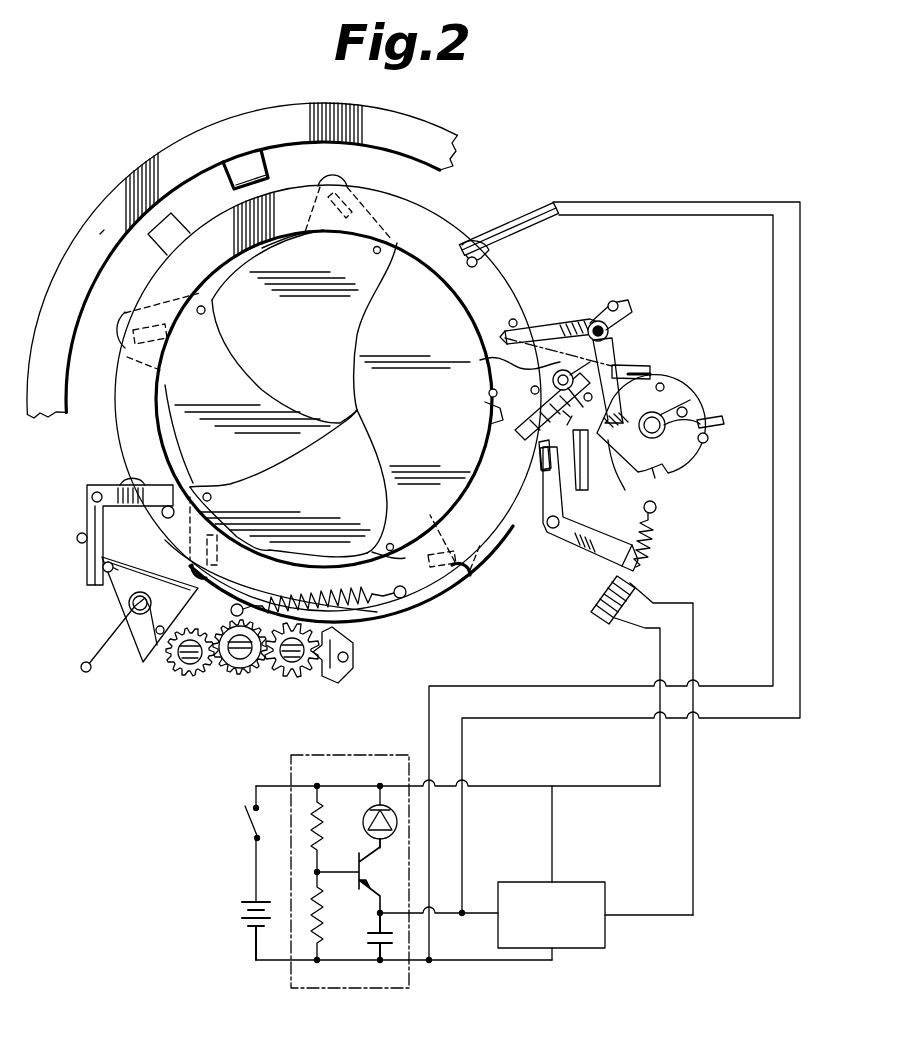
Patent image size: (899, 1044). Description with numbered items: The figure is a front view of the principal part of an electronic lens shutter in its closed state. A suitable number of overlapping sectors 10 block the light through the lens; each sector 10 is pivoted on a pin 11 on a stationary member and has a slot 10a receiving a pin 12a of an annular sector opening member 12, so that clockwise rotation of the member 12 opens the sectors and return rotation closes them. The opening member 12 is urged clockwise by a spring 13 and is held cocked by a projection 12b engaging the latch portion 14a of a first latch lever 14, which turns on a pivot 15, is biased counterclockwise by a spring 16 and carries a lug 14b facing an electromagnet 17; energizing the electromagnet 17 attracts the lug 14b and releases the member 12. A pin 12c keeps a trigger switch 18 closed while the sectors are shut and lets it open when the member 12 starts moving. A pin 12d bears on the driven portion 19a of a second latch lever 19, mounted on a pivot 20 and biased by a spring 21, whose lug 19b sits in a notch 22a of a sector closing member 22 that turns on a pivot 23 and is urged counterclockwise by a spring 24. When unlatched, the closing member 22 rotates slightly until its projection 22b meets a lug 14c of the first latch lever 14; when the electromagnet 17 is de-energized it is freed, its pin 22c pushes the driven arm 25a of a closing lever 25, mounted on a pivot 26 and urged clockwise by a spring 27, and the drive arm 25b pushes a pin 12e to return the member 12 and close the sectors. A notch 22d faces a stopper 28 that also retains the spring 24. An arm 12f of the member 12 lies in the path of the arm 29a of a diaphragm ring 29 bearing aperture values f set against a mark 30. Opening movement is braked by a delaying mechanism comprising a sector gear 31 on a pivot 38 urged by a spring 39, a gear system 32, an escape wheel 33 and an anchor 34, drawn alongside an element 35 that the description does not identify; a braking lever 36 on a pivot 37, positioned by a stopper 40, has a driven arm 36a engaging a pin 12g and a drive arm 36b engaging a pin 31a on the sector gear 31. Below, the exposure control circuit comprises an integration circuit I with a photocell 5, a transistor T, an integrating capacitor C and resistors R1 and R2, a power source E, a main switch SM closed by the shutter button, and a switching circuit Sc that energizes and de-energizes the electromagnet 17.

The photocell 5 is at (368, 808).
The sector 10 is at (317, 393).
The slot 10a is at (362, 394).
The pin 11 is at (379, 254).
The sector opening member 12 is at (430, 212).
The pin 12a is at (340, 184).
The projection 12b is at (546, 456).
The pin 12c is at (490, 256).
The pin 12d is at (496, 414).
The pin 12e is at (511, 319).
The arm 12f is at (200, 226).
The pin 12g is at (162, 514).
The spring 13 is at (365, 606).
The first latch lever 14 is at (583, 549).
The latch portion 14a is at (540, 466).
The lug 14b is at (638, 568).
The lug 14c is at (583, 489).
The pivot 15 is at (549, 528).
The spring 16 is at (652, 528).
The electromagnet 17 is at (603, 619).
The trigger switch 18 is at (485, 236).
The second latch lever 19 is at (614, 360).
The driven portion 19a is at (497, 440).
The lug 19b is at (653, 356).
The pivot 20 is at (565, 370).
The spring 21 is at (508, 370).
The sector closing member 22 is at (682, 450).
The notch 22a is at (665, 375).
The projection 22b is at (616, 460).
The pin 22c is at (702, 401).
The notch 22d is at (668, 479).
The pivot 23 is at (651, 438).
The spring 24 is at (722, 418).
The closing lever 25 is at (550, 320).
The driven arm 25a is at (624, 413).
The drive arm 25b is at (504, 334).
The pivot 26 is at (597, 320).
The spring 27 is at (622, 297).
The stopper 28 is at (709, 439).
The diaphragm ring 29 is at (165, 157).
The arm 29a is at (264, 180).
The mark 30 is at (50, 288).
The sector gear 31 is at (110, 595).
The pin 31a is at (112, 566).
The gear system 32 is at (221, 687).
The escape wheel 33 is at (289, 679).
The anchor 34 is at (338, 684).
The gear 35 is at (190, 687).
The braking lever 36 is at (88, 518).
The driven arm 36a is at (132, 482).
The drive arm 36b is at (96, 562).
The pivot 37 is at (91, 497).
The pivot 38 is at (152, 603).
The spring 39 is at (115, 640).
The stopper 40 is at (77, 538).
The diaphragm aperture values f is at (100, 233).
The integration circuit I is at (319, 990).
The main switch SM is at (236, 844).
The power source E is at (245, 931).
The resistor R1 is at (332, 829).
The resistor R2 is at (332, 916).
The transistor T is at (348, 876).
The integrating capacitor C is at (370, 936).
The switching circuit Sc is at (551, 915).